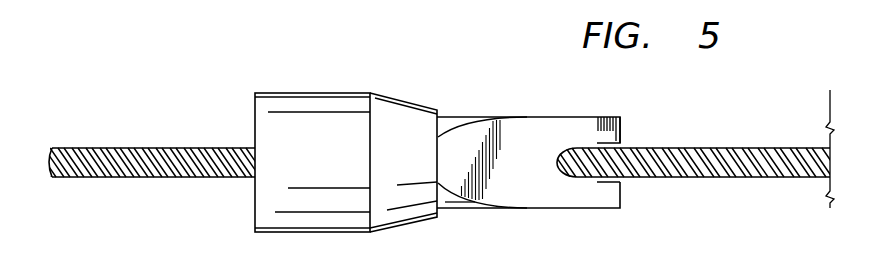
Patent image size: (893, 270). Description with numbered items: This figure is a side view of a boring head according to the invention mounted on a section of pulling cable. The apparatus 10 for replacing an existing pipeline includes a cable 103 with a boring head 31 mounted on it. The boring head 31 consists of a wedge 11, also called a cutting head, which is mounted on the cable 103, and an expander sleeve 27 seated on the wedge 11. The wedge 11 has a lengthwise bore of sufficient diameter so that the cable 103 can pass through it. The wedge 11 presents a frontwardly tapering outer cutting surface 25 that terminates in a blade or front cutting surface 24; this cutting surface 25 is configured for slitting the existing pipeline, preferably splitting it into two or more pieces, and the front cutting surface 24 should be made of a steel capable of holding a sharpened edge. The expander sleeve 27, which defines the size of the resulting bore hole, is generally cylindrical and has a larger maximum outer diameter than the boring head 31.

The apparatus 10 is at (347, 123).
The expander sleeve 27 is at (348, 92).
The boring head 31 is at (411, 96).
The wedge 11 is at (477, 116).
The outer cutting surface 25 is at (540, 138).
The front cutting surface 24 is at (621, 121).
The cable 103 is at (147, 148).